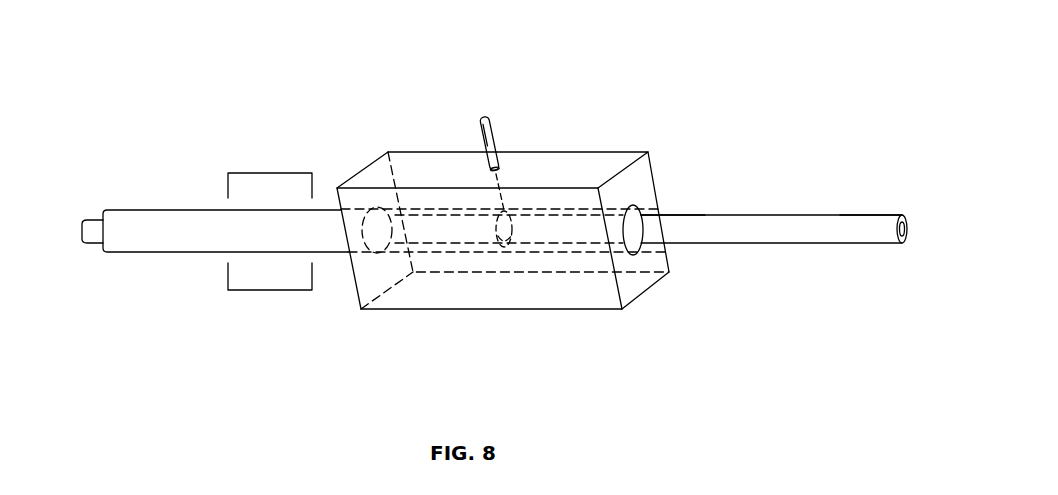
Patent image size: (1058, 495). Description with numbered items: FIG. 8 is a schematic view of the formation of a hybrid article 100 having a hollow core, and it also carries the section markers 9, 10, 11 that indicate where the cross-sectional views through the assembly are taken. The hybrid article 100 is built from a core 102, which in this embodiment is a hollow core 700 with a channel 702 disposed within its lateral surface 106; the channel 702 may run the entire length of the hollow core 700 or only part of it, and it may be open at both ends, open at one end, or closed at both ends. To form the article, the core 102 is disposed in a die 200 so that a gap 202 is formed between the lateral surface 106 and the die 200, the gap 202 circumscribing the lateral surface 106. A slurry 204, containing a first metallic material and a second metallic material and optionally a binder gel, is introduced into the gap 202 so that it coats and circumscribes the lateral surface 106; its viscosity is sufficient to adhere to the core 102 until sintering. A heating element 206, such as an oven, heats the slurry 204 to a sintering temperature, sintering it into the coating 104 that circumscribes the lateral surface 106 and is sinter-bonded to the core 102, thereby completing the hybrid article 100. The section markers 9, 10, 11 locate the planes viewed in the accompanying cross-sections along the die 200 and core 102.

The hybrid article 100 is at (148, 215).
The core 102 is at (847, 245).
The coating 104 is at (170, 250).
The lateral surface 106 is at (703, 217).
The die 200 is at (632, 150).
The gap 202 is at (637, 212).
The slurry 204 is at (337, 223).
The heating element 206 is at (228, 172).
The hollow core 700 is at (853, 217).
The channel 702 is at (907, 222).
The section line 9- 9 is at (558, 177).
The section line 10- 10 is at (482, 97).
The section line 11- 11 is at (433, 182).